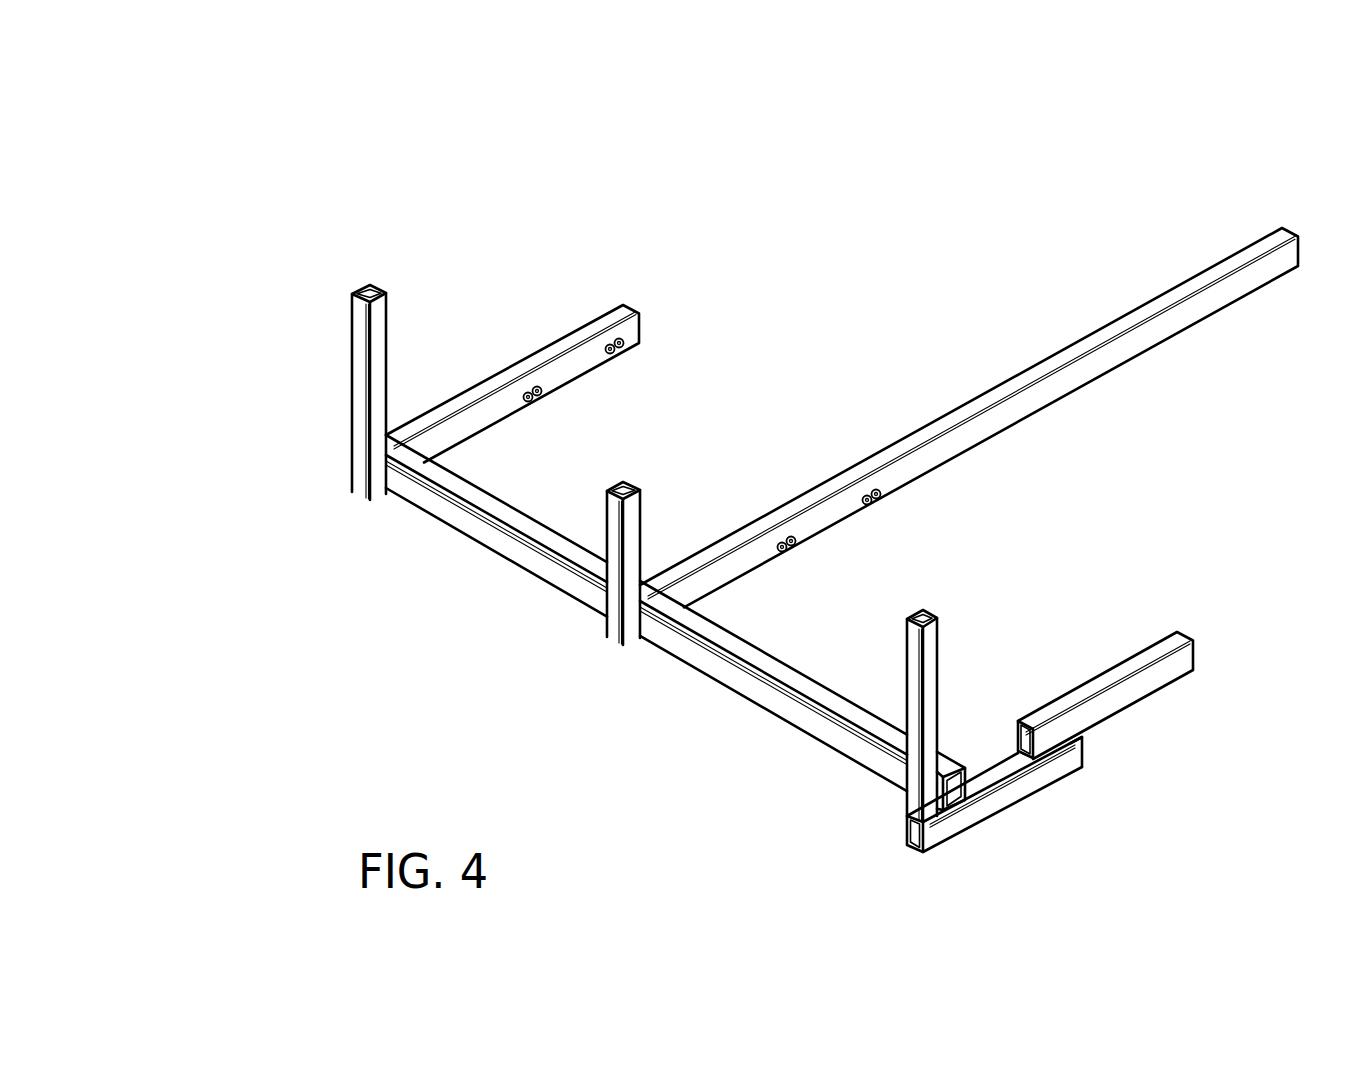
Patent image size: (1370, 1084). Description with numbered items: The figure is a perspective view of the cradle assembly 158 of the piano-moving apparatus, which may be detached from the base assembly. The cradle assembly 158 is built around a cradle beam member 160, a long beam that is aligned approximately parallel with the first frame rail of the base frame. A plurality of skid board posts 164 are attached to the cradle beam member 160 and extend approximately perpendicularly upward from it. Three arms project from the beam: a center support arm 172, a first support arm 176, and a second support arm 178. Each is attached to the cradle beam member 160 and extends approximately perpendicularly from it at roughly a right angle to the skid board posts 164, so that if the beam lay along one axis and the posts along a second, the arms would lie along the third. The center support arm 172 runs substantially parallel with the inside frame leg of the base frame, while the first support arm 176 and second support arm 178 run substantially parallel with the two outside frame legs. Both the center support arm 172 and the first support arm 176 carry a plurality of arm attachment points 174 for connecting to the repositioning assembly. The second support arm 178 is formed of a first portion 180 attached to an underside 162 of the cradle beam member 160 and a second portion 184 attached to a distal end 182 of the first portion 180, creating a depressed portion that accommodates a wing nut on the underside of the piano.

The cradle assembly 158 is at (985, 196).
The cradle beam member 160 is at (698, 677).
The underside 162 is at (552, 598).
The skid board posts 164 is at (362, 347).
The center support arm 172 is at (1117, 357).
The arm attachment points 174 is at (625, 346).
The first support arm 176 is at (577, 323).
The second support arm 178 is at (1074, 731).
The first portion 180 is at (1018, 790).
The distal end 182 is at (1086, 749).
The second portion 184 is at (1098, 685).